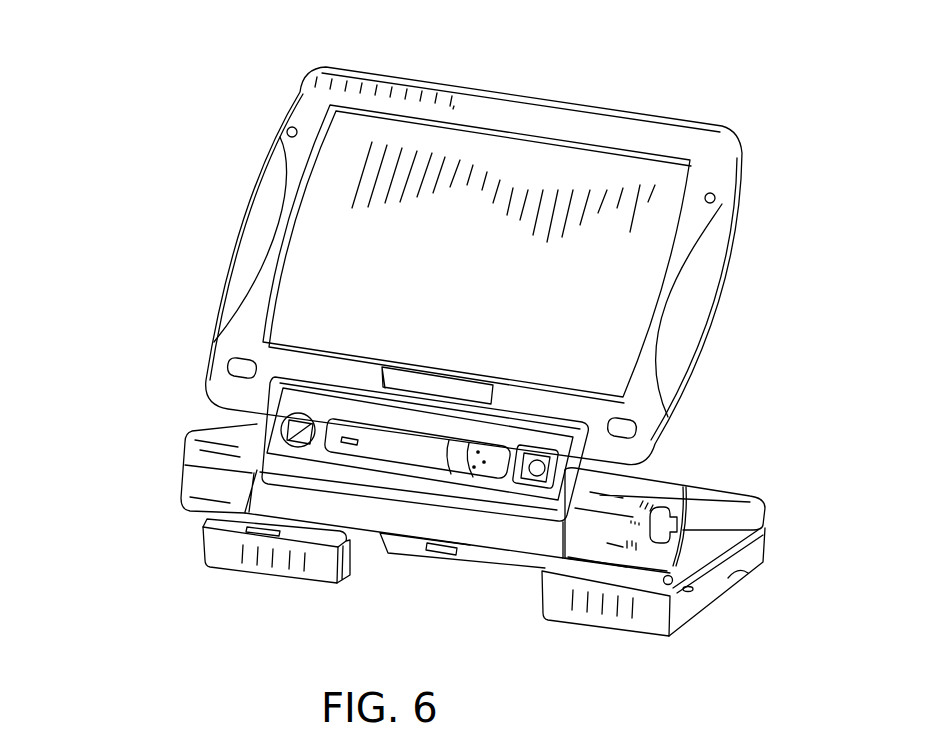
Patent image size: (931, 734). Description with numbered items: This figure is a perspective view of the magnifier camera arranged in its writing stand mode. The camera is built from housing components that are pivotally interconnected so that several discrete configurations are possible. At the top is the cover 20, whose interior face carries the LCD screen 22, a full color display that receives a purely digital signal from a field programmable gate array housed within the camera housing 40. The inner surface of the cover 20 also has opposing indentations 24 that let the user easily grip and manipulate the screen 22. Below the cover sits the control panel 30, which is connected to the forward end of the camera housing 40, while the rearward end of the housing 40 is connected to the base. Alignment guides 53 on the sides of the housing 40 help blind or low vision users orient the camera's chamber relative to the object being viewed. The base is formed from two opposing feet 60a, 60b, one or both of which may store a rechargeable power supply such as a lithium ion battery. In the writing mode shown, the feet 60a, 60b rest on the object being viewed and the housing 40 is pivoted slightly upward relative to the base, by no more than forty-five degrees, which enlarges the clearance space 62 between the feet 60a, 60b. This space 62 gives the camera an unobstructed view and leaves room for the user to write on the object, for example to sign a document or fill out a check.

The cover 20 is at (508, 168).
The LCD screen 22 is at (490, 268).
The opposing indentations 24 is at (272, 283).
The control panel 30 is at (190, 438).
The camera housing 40 is at (710, 492).
The alignment guides 53 is at (686, 505).
The clearance space 62 is at (457, 612).
The foot 60a is at (228, 537).
The foot 60b is at (614, 620).